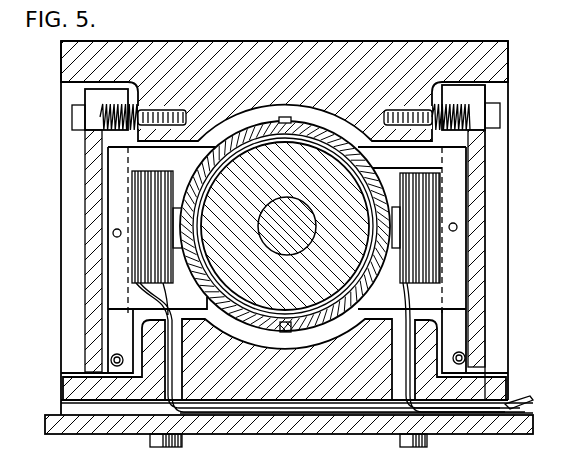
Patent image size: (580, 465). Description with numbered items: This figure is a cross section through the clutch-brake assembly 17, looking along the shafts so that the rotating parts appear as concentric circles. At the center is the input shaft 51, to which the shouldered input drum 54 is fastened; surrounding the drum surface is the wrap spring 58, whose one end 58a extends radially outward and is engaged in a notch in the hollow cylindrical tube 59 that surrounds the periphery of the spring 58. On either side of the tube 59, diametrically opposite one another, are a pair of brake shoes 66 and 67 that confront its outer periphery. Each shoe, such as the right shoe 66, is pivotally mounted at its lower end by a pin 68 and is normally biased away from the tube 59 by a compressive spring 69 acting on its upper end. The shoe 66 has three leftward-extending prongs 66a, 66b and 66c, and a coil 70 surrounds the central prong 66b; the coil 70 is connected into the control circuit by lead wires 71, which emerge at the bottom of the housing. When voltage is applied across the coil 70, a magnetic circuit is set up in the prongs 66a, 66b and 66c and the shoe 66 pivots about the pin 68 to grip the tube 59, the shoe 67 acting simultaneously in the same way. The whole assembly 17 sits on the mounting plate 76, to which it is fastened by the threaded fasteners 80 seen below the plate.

The clutch-brake assembly 17 is at (406, 48).
The input shaft 51 is at (260, 243).
The input drum 54 is at (248, 166).
The spring 58 is at (207, 196).
The end of the spring 58a is at (285, 150).
The hollow cylindrical tube 59 is at (325, 120).
The brake shoe 66 is at (477, 178).
The prong 66a is at (412, 168).
The central prong 66b is at (398, 236).
The prong 66c is at (433, 298).
The brake shoe 67 is at (90, 172).
The pin 68 is at (465, 357).
The compressive spring 69 is at (455, 101).
The coil 70 is at (433, 207).
The lead wires 71 is at (516, 398).
The plate 76 is at (484, 428).
The threaded fasteners 80 is at (182, 442).